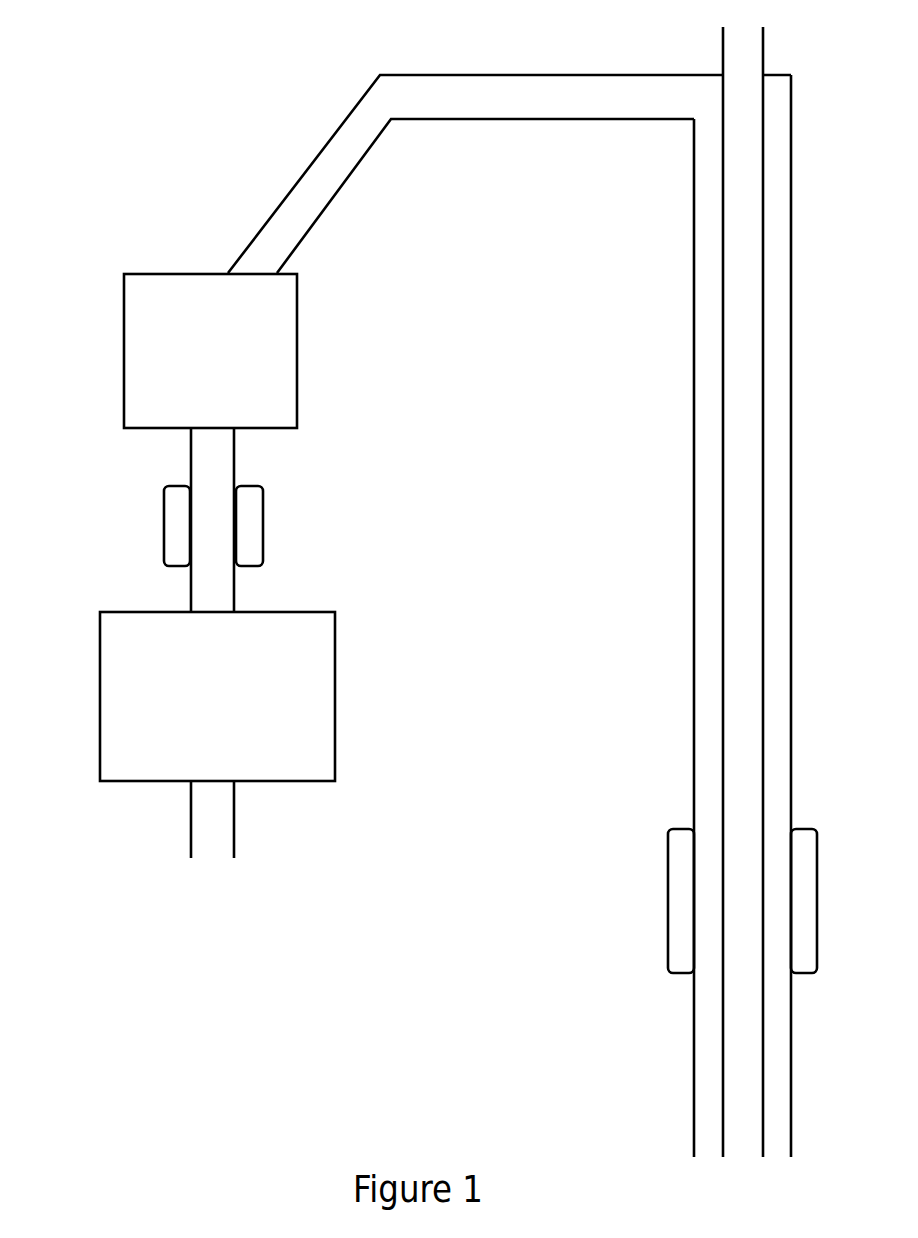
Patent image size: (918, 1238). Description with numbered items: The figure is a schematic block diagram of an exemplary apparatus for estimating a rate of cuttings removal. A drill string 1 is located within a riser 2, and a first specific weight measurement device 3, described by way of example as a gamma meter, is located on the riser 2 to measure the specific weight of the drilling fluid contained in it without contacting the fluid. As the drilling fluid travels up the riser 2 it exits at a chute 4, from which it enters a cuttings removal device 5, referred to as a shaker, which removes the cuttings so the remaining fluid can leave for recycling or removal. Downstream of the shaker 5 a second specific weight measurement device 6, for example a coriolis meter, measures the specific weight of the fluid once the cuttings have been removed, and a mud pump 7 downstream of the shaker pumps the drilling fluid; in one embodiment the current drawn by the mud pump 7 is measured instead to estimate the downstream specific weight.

The drill string 1 is at (765, 43).
The riser 2 is at (791, 163).
The first specific weight measurement device 3 is at (670, 927).
The chute 4 is at (320, 148).
The cuttings removal device 5 is at (297, 328).
The second specific weight measurement device 6 is at (260, 513).
The mud pump 7 is at (100, 712).